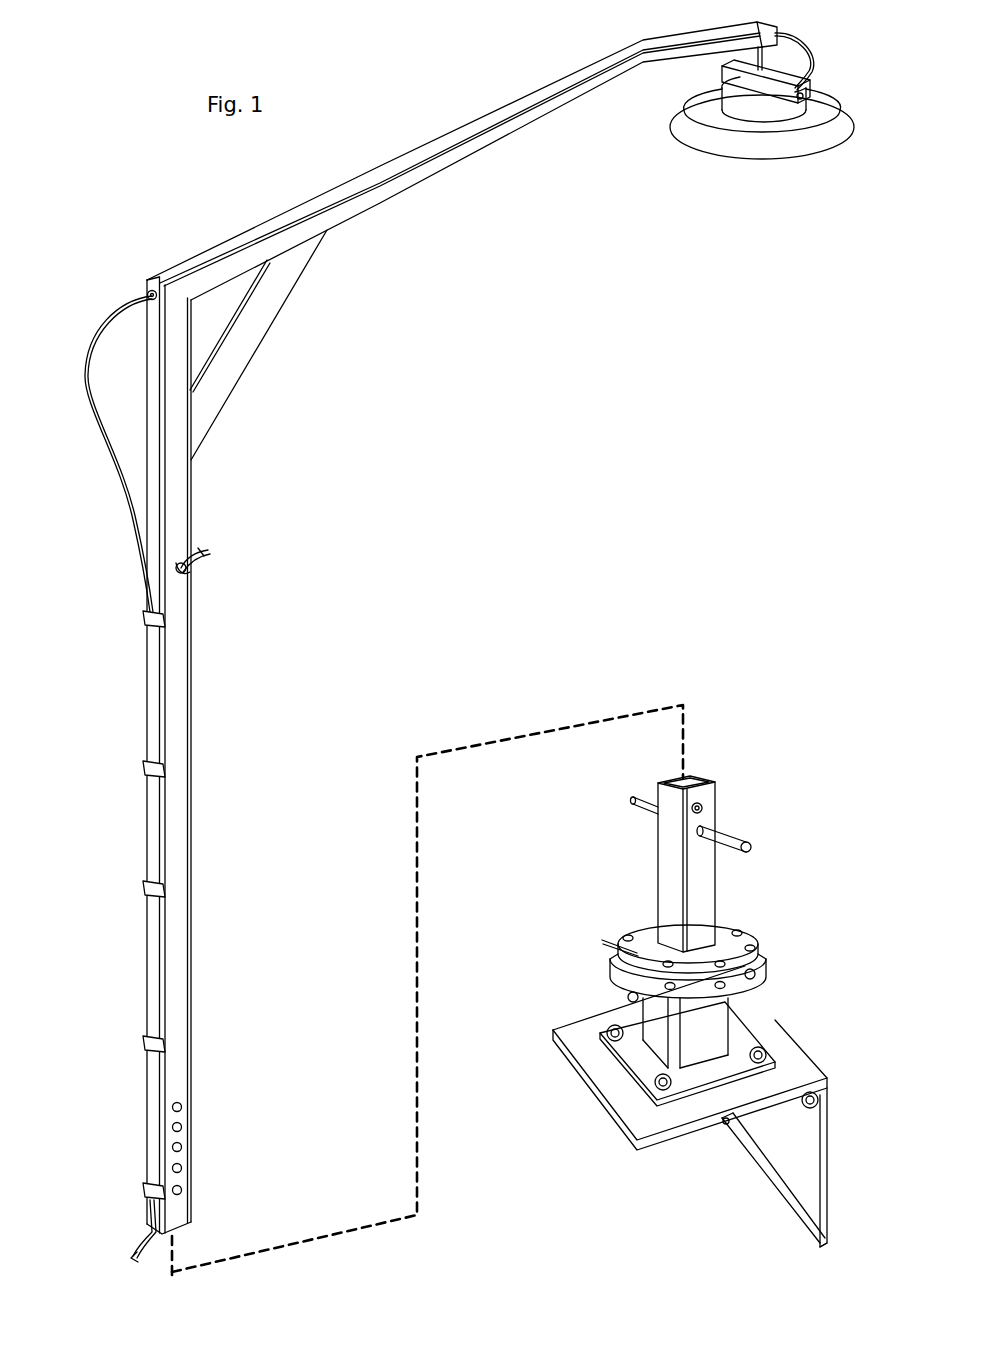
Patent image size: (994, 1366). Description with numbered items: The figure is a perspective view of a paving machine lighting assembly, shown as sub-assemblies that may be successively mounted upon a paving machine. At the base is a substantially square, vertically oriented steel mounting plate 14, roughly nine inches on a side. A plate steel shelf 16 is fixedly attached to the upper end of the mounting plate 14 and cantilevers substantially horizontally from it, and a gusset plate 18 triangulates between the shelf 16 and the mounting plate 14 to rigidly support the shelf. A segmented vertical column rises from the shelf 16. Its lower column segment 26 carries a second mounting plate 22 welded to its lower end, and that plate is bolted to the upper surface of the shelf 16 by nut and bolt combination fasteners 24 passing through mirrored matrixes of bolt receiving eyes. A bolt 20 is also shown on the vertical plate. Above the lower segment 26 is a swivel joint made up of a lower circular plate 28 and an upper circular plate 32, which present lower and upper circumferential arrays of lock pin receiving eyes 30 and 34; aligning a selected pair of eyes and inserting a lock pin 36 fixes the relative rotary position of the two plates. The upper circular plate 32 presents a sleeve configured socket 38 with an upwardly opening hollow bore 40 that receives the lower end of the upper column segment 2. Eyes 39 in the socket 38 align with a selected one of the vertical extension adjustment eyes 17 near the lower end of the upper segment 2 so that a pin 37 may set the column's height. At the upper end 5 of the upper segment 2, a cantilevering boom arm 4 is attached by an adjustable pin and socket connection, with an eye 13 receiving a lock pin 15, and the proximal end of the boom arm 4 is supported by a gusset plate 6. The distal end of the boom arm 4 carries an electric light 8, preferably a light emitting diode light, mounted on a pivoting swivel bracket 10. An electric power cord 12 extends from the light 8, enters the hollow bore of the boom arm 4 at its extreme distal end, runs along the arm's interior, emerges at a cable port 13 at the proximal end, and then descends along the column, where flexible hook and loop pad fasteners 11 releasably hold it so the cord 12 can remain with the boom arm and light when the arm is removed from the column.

The upper column segment 2 is at (178, 860).
The cantilevering boom arm 4 is at (427, 172).
The upper end of the upper column segment 5 is at (178, 423).
The gusset plate 6 is at (247, 335).
The electric light 8 is at (813, 142).
The pivoting swivel bracket 10 is at (797, 105).
The flexible hook and loop pad fasteners 11 is at (148, 768).
The electric power cord 12 is at (808, 42).
The cable port 13 is at (148, 293).
The mounting plate 14 is at (747, 1142).
The lock pin 15 is at (193, 570).
The shelf 16 is at (572, 1035).
The vertical extension adjustment eyes 17 is at (183, 1125).
The gusset plate 18 is at (790, 1153).
The bolt 20 is at (815, 1105).
The second mounting plate 22 is at (612, 1038).
The nut and bolt combination fasteners 24 is at (657, 1083).
The lower column segment 26 is at (692, 1048).
The lower circular plate 28 is at (773, 980).
The lower circumferential array of lock pin receiving eyes 30 is at (750, 978).
The upper circular plate 32 is at (645, 932).
The upper circumferential array of lock pin receiving eyes 34 is at (753, 947).
The lock pin 36 is at (630, 995).
The pin 37 is at (632, 802).
The sleeve configured socket 38 is at (703, 857).
The eyes within socket 39 is at (700, 806).
The hollow bore 40 is at (692, 782).